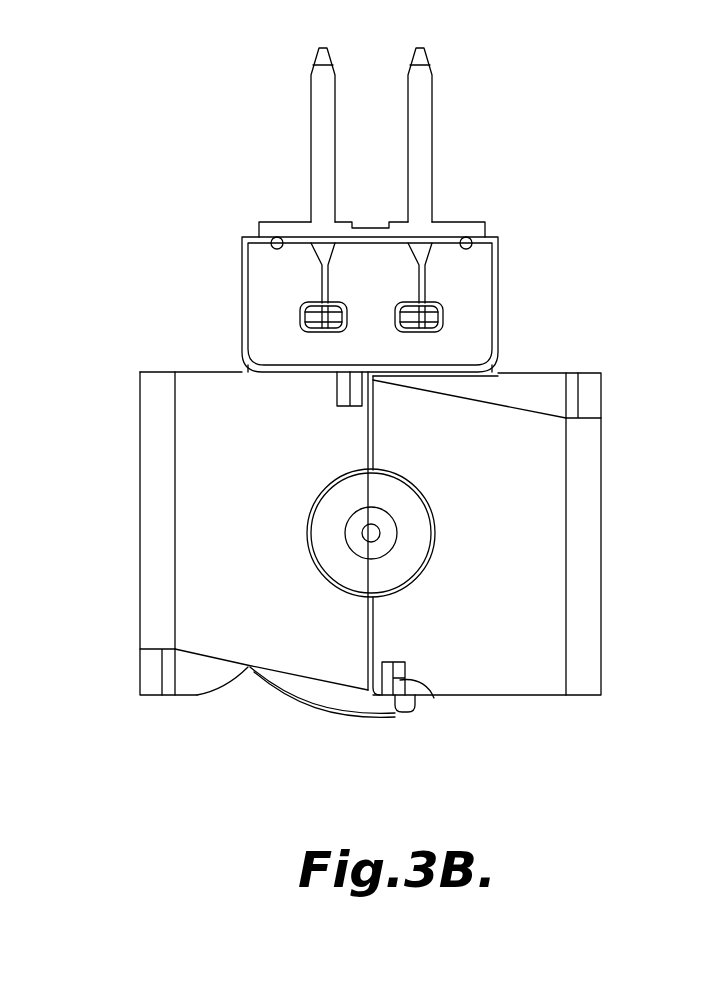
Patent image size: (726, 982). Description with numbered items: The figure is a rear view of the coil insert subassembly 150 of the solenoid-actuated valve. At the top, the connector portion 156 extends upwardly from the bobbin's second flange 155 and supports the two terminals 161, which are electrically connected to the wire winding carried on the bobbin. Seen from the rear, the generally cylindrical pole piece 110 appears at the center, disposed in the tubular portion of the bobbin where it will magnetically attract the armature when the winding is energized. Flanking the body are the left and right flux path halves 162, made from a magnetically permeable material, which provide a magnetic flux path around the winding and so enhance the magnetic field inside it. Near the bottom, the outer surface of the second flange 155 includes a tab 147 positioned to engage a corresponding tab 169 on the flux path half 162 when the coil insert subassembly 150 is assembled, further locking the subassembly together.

The coil insert subassembly 150 is at (130, 303).
The terminals 161 is at (318, 113).
The connector portion 156 is at (480, 275).
The flux path halves 162 is at (148, 513).
The pole piece 110 is at (403, 553).
The second flange 155 is at (302, 685).
The tab 147 is at (415, 705).
The tab 169 is at (437, 700).